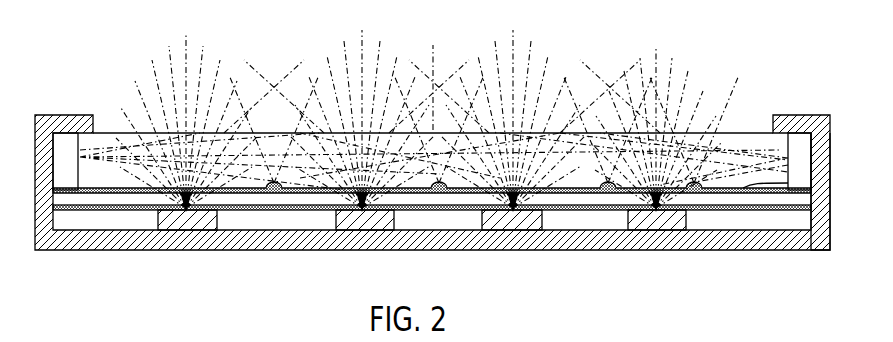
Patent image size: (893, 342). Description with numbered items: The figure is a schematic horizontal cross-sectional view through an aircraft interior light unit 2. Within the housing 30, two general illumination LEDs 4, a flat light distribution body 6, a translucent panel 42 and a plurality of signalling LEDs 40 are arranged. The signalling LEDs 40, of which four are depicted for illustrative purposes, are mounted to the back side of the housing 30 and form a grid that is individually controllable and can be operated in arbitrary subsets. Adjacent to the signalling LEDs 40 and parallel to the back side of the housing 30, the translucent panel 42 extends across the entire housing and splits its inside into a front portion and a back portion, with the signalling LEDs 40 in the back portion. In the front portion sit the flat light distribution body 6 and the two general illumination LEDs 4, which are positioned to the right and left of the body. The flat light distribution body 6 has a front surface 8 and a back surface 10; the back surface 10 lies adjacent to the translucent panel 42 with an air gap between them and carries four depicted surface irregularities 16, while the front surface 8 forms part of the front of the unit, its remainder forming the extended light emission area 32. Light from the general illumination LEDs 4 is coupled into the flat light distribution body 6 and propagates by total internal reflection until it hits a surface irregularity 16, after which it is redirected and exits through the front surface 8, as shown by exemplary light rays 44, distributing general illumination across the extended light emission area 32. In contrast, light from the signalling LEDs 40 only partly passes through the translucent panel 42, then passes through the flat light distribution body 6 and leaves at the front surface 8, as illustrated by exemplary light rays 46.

The aircraft interior light unit 2 is at (445, 163).
The general illumination LEDs 4 is at (63, 168).
The flat light distribution body 6 is at (733, 131).
The front surface 8 is at (78, 162).
The back surface 10 is at (801, 168).
The surface irregularities 16 is at (270, 192).
The housing 30 is at (830, 197).
The extended light emission area 32 is at (670, 128).
The signalling LEDs 40 is at (380, 221).
The translucent panel 42 is at (133, 212).
The light rays 44 is at (280, 60).
The light rays 46 is at (513, 216).